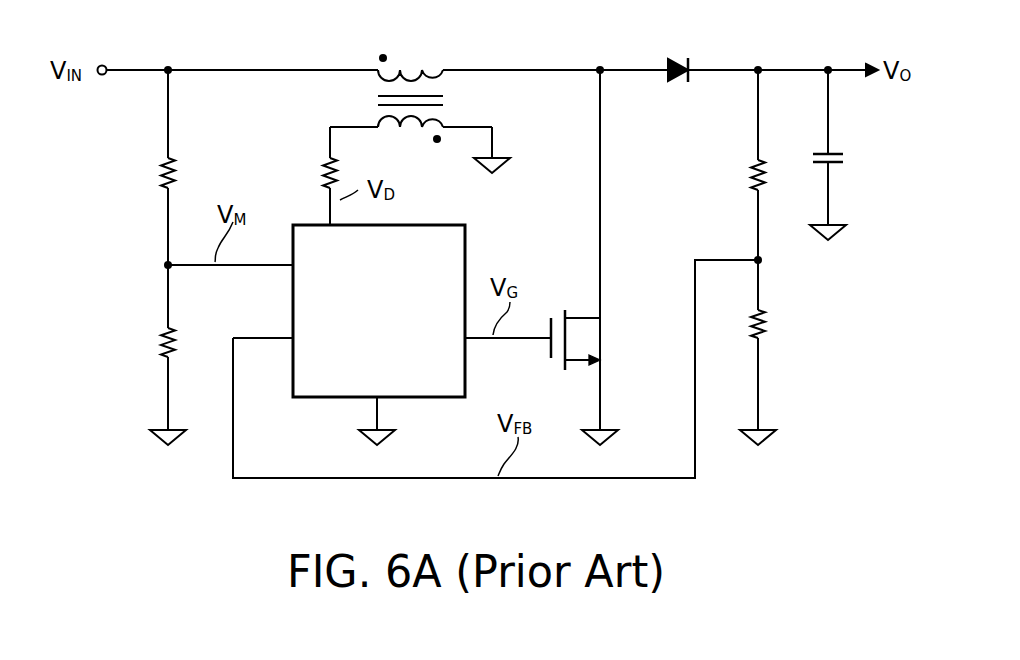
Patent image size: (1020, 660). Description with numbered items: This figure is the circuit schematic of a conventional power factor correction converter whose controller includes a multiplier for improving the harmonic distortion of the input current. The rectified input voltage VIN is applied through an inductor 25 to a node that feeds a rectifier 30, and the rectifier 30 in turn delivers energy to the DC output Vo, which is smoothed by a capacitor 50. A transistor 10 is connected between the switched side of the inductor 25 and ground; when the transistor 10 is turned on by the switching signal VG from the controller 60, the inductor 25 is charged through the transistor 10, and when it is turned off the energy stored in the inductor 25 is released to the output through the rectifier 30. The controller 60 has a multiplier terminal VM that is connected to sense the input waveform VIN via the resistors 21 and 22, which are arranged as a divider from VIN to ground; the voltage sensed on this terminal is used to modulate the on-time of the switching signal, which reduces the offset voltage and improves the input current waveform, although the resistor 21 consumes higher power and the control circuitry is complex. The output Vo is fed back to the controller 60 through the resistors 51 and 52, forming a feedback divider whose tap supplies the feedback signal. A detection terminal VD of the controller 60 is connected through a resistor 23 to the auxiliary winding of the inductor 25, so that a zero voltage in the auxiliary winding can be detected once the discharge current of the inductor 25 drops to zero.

The transistor 10 is at (603, 337).
The resistor 21 is at (158, 178).
The resistor 22 is at (158, 345).
The resistor 23 is at (320, 178).
The inductor 25 is at (417, 62).
The rectifier 30 is at (678, 60).
The capacitor 50 is at (848, 157).
The resistor 51 is at (748, 182).
The resistor 52 is at (776, 325).
The control circuit 60 is at (468, 250).